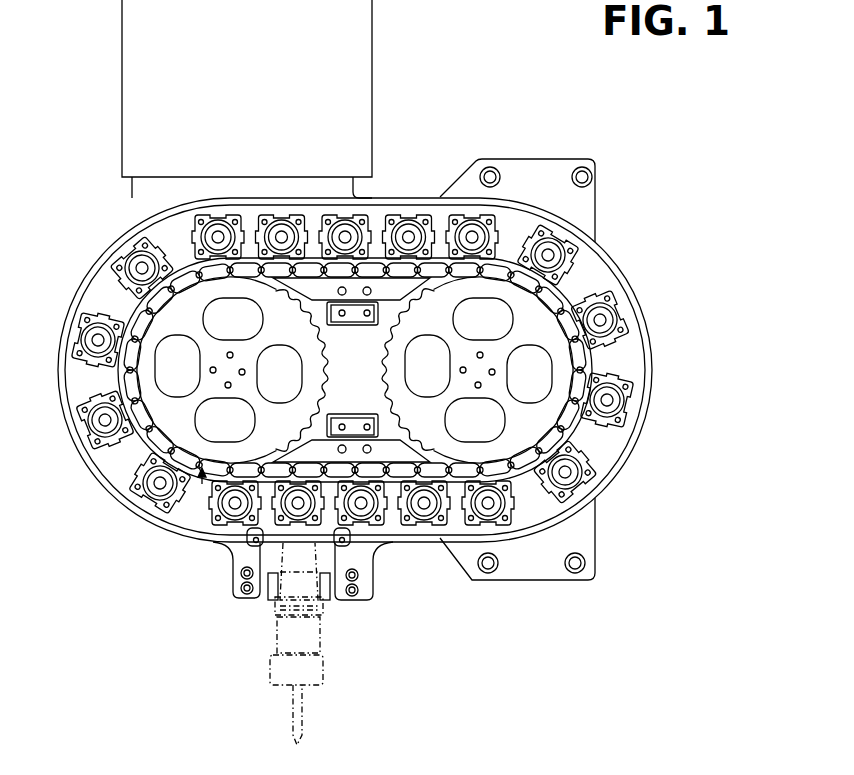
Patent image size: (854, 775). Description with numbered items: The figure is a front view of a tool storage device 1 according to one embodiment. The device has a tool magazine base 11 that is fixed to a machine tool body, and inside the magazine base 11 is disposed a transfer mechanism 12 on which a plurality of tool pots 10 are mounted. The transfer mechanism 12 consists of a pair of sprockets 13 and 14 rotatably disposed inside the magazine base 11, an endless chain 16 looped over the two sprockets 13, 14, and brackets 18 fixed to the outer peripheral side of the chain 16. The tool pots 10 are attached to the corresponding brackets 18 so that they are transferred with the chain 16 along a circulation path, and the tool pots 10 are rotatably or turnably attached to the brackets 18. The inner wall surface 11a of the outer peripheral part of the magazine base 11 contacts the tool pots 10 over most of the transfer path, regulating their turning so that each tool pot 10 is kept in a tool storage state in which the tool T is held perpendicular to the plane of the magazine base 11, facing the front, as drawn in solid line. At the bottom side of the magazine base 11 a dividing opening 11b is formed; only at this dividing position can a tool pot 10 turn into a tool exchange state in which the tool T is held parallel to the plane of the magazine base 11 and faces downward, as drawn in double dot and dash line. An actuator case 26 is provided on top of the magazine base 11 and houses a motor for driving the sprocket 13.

The tool storage device 1 is at (547, 135).
The tool pots 10 is at (168, 508).
The tool magazine base 11 is at (408, 200).
The inner wall surface 11a is at (105, 290).
The dividing opening 11b is at (275, 535).
The transfer mechanism 12 is at (200, 486).
The sprocket 13 is at (173, 415).
The sprocket 14 is at (545, 418).
The endless chain 16 is at (520, 478).
The brackets 18 is at (513, 467).
The actuator case 26 is at (350, 70).
The tool T is at (323, 640).